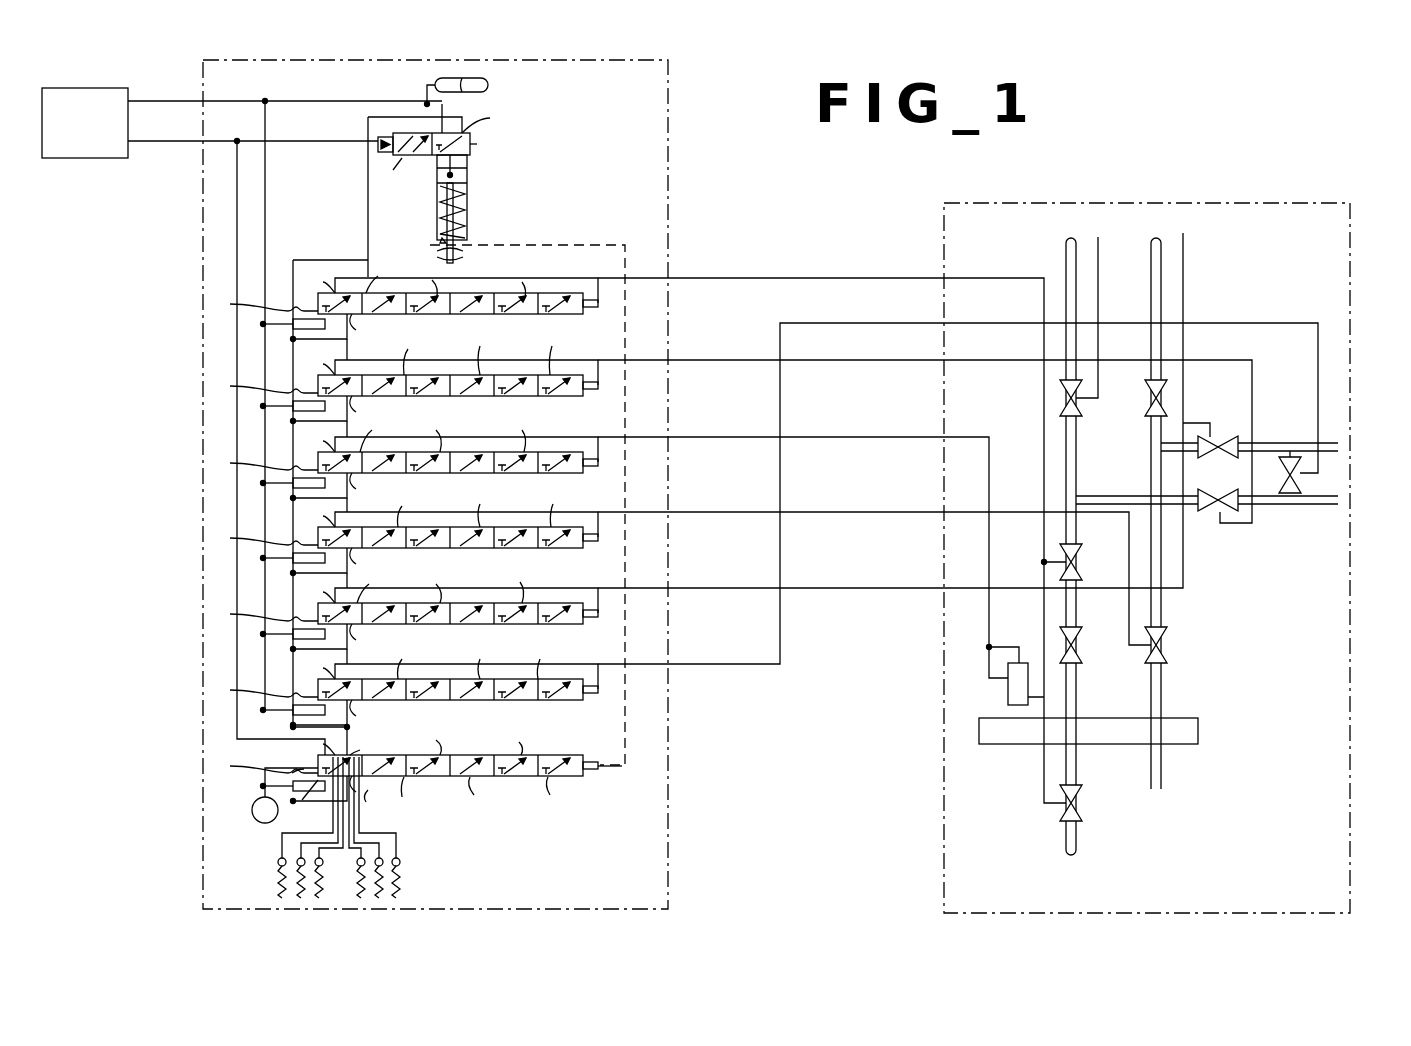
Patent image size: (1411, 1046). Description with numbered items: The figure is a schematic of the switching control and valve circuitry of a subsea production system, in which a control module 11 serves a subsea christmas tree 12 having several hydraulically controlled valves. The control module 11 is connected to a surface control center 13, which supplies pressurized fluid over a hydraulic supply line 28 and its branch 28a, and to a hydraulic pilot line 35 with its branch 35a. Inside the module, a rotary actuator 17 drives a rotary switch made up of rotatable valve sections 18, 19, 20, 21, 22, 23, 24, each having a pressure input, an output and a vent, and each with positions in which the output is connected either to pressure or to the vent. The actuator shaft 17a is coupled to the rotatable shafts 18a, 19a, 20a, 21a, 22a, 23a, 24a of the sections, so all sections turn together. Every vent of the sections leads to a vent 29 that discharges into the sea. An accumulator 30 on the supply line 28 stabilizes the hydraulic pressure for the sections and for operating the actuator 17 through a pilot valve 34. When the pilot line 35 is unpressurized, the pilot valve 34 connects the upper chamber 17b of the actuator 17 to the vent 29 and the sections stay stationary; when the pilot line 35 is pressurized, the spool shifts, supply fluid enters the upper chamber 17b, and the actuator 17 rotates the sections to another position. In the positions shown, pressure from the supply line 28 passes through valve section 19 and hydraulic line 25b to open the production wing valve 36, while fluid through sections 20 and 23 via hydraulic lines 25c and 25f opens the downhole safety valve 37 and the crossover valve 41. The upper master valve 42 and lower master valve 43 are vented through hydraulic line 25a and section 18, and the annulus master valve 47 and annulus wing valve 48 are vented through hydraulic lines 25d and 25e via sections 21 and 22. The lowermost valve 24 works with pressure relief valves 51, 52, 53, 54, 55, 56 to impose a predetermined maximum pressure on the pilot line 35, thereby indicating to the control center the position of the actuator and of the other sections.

The control module 11 is at (668, 120).
The subsea christmas tree 12 is at (944, 207).
The surface control center 13 is at (96, 132).
The rotary actuator 17 is at (467, 202).
The rotatable shaft 17a is at (467, 228).
The upper chamber 17b is at (467, 178).
The valve section 18 is at (478, 292).
The rotatable shaft 18a is at (600, 300).
The valve section 19 is at (510, 375).
The rotatable shaft 19a is at (600, 382).
The valve section 20 is at (480, 452).
The rotatable shaft 20a is at (600, 462).
The valve section 21 is at (516, 527).
The rotatable shaft 21a is at (596, 534).
The valve section 22 is at (477, 603).
The rotatable shaft 22a is at (598, 610).
The valve section 23 is at (436, 679).
The rotatable shaft 23a is at (594, 686).
The lowermost valve 24 is at (473, 755).
The rotatable shaft 24a is at (596, 766).
The hydraulic line 25a is at (724, 278).
The hydraulic line 25b is at (710, 360).
The hydraulic line 25c is at (715, 437).
The hydraulic line 25d is at (715, 512).
The hydraulic line 25e is at (715, 588).
The hydraulic line 25f is at (715, 664).
The hydraulic supply line 28 is at (156, 101).
The branch of hydraulic supply line 28a is at (265, 193).
The vent 29 is at (253, 800).
The accumulator 30 is at (489, 85).
The pilot valve 34 is at (470, 152).
The hydraulic pilot line 35 is at (178, 143).
The branch of hydraulic pilot line 35a is at (238, 175).
The production wing valve 36 is at (1214, 512).
The downhole safety valve 37 is at (1082, 812).
The crossover valve 41 is at (1283, 458).
The upper master valve 42 is at (1078, 562).
The lower master valve 43 is at (1078, 652).
The annulus master valve 47 is at (1163, 654).
The annulus wing valve 48 is at (1222, 437).
The pressure relief valve 51 is at (278, 864).
The pressure relief valve 52 is at (297, 860).
The pressure relief valve 53 is at (315, 858).
The pressure relief valve 54 is at (365, 858).
The pressure relief valve 55 is at (383, 859).
The pressure relief valve 56 is at (400, 864).